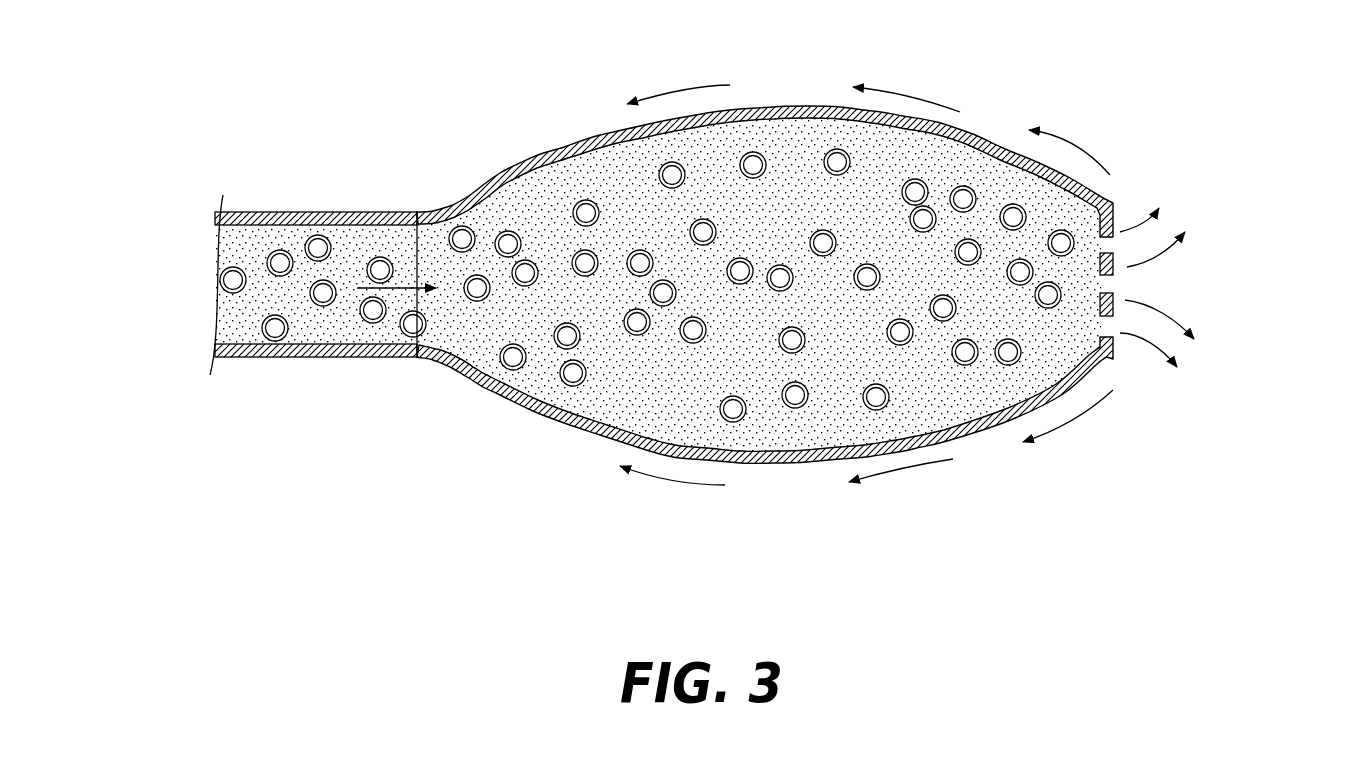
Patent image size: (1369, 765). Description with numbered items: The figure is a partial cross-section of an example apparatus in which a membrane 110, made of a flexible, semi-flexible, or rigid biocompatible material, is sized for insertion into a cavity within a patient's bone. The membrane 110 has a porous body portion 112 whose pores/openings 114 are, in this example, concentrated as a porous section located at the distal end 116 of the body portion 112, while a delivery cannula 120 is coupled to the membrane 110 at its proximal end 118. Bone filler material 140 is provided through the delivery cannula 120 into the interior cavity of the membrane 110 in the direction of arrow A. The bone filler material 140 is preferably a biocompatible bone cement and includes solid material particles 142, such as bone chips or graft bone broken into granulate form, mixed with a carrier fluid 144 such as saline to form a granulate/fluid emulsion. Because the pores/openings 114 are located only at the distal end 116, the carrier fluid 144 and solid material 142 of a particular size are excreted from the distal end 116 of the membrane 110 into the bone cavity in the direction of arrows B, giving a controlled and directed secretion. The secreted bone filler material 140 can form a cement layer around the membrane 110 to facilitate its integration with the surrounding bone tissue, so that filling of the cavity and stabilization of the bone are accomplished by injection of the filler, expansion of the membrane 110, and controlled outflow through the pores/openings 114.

The membrane 110 is at (833, 105).
The body portion 112 is at (911, 452).
The pores/openings 114 is at (1112, 328).
The distal end 116 is at (1128, 99).
The proximal end 118 is at (659, 290).
The delivery cannula 120 is at (262, 353).
The bone filler material 140 is at (280, 250).
The solid material particles 142 is at (221, 275).
The carrier fluid 144 is at (262, 298).
The arrow A is at (380, 293).
The arrows B is at (1149, 218).